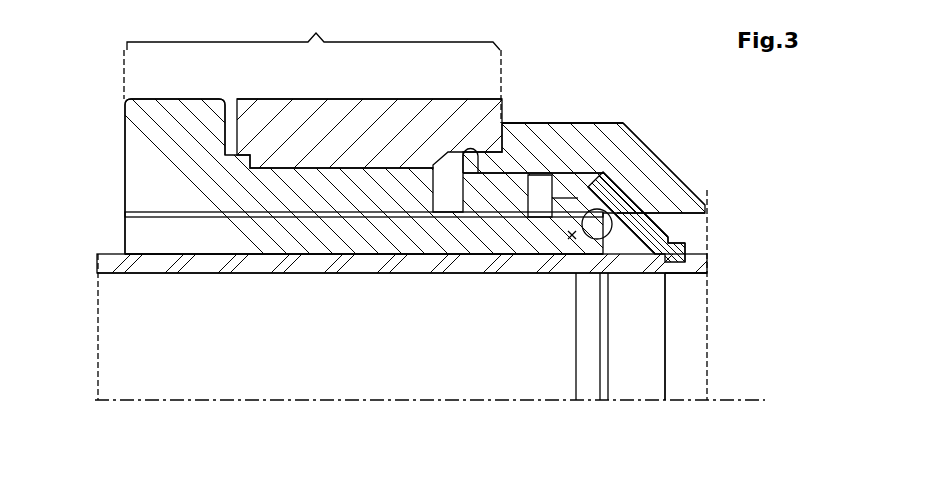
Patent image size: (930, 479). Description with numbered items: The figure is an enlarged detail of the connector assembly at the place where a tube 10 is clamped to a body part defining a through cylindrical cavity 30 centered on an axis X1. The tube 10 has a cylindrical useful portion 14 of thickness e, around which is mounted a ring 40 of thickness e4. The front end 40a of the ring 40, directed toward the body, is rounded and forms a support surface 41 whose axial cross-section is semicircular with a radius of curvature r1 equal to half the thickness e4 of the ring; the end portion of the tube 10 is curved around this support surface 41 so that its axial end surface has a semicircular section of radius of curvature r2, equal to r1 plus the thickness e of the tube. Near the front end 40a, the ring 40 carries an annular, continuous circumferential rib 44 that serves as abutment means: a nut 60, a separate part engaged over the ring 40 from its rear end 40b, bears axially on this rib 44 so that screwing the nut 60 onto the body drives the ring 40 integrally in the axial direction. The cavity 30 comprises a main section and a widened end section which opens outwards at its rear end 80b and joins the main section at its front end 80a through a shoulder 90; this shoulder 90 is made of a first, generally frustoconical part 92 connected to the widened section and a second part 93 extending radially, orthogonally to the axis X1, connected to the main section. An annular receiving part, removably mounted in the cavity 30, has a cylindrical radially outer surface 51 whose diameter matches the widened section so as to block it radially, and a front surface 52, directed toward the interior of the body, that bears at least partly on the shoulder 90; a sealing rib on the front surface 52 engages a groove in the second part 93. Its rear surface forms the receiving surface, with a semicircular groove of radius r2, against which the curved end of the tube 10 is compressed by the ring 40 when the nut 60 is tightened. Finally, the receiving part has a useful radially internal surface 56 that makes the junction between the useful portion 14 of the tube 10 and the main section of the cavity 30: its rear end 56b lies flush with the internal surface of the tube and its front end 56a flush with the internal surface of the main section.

The tube 10 is at (110, 263).
The useful portion of the tube 14 is at (283, 263).
The through cylindrical cavity 30 is at (756, 397).
The ring 40 is at (133, 237).
The front end of the ring 40a is at (566, 256).
The rear end of the ring 40b is at (116, 222).
The support surface 41 is at (657, 214).
The circumferential rib 44 is at (510, 180).
The cylindrical radially outer surface of the receiving part 51 is at (562, 166).
The front surface of the receiving part 52 is at (619, 174).
The useful radially internal surface 56 is at (657, 281).
The front end of the useful surface 56a is at (673, 280).
The rear end of the useful surface 56b is at (612, 284).
The nut 60 is at (181, 96).
The front end of the widened end section 80a is at (625, 121).
The rear end of the widened end section 80b is at (272, 96).
The shoulder 90 is at (665, 205).
The first frustoconical part of the shoulder 92 is at (678, 222).
The second radial part of the shoulder 93 is at (690, 240).
The radius of curvature of the support surface r1 is at (584, 230).
The radius of curvature of the tube end surface r2 is at (596, 258).
The thickness of the tube e is at (447, 225).
The thickness of the ring e4 is at (392, 177).
The axis X1 is at (406, 402).